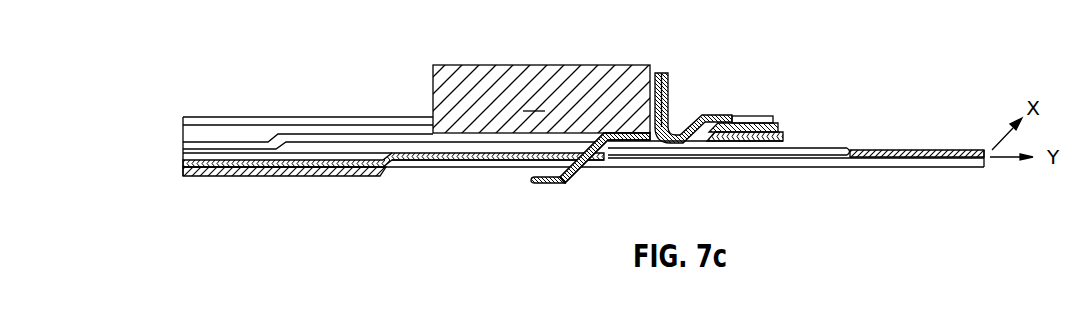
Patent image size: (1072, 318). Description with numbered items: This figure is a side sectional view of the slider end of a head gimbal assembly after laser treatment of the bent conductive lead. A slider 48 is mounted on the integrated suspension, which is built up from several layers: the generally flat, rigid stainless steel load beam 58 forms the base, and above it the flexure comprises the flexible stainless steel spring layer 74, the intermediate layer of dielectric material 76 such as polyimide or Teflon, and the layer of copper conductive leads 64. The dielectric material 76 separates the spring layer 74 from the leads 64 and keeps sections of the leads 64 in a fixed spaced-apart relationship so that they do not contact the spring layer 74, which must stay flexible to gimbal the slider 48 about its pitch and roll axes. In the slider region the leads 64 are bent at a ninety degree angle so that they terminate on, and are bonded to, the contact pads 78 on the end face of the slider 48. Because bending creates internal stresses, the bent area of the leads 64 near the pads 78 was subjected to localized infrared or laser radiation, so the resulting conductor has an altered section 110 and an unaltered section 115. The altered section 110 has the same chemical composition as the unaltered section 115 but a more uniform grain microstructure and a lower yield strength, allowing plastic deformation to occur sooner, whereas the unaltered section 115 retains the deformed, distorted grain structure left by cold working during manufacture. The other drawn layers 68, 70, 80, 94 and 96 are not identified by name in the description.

The slider 48 is at (541, 99).
The load beam 58 is at (183, 165).
The leads 64 is at (215, 117).
The adhesive layer 68 is at (183, 154).
The base layer 70 is at (727, 167).
The spring layer 74 is at (183, 149).
The dielectric material 76 is at (183, 134).
The contact pads 78 is at (658, 72).
The extension layer 80 is at (812, 147).
The bent lead 94 is at (570, 165).
The lead foot 96 is at (545, 165).
The altered section 110 is at (672, 120).
The unaltered section 115 is at (762, 115).